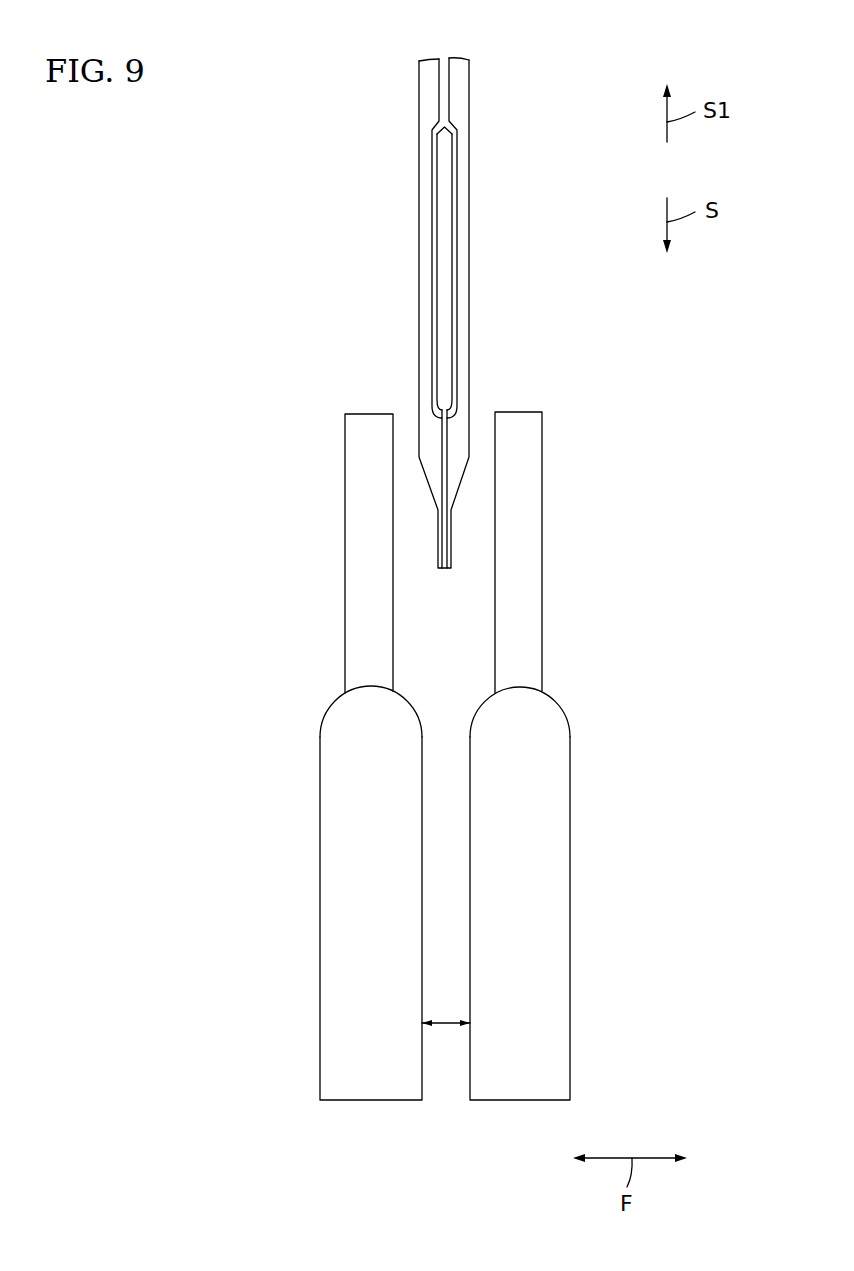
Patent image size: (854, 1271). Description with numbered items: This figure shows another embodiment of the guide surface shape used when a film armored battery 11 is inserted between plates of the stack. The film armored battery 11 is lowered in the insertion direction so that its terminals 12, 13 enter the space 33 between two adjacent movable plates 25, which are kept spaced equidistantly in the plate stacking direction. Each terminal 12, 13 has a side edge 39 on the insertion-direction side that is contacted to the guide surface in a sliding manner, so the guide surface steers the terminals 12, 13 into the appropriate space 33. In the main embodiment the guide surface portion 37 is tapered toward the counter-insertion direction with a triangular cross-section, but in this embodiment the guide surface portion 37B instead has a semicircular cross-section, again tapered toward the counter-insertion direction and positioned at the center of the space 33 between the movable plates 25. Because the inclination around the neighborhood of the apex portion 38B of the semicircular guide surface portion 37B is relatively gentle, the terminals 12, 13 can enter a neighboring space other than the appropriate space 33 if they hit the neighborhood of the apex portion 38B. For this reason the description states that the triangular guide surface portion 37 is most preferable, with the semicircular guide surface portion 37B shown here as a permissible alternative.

The film armored battery 11 is at (478, 90).
The movable plate 25 is at (463, 165).
The terminal 12 is at (527, 347).
The terminal 13 is at (444, 489).
The side edge 39 is at (444, 409).
The guide surface portion 37 is at (537, 580).
The guide surface portion 37B is at (358, 708).
The apex portion 38B is at (371, 686).
The space 33 is at (447, 1024).